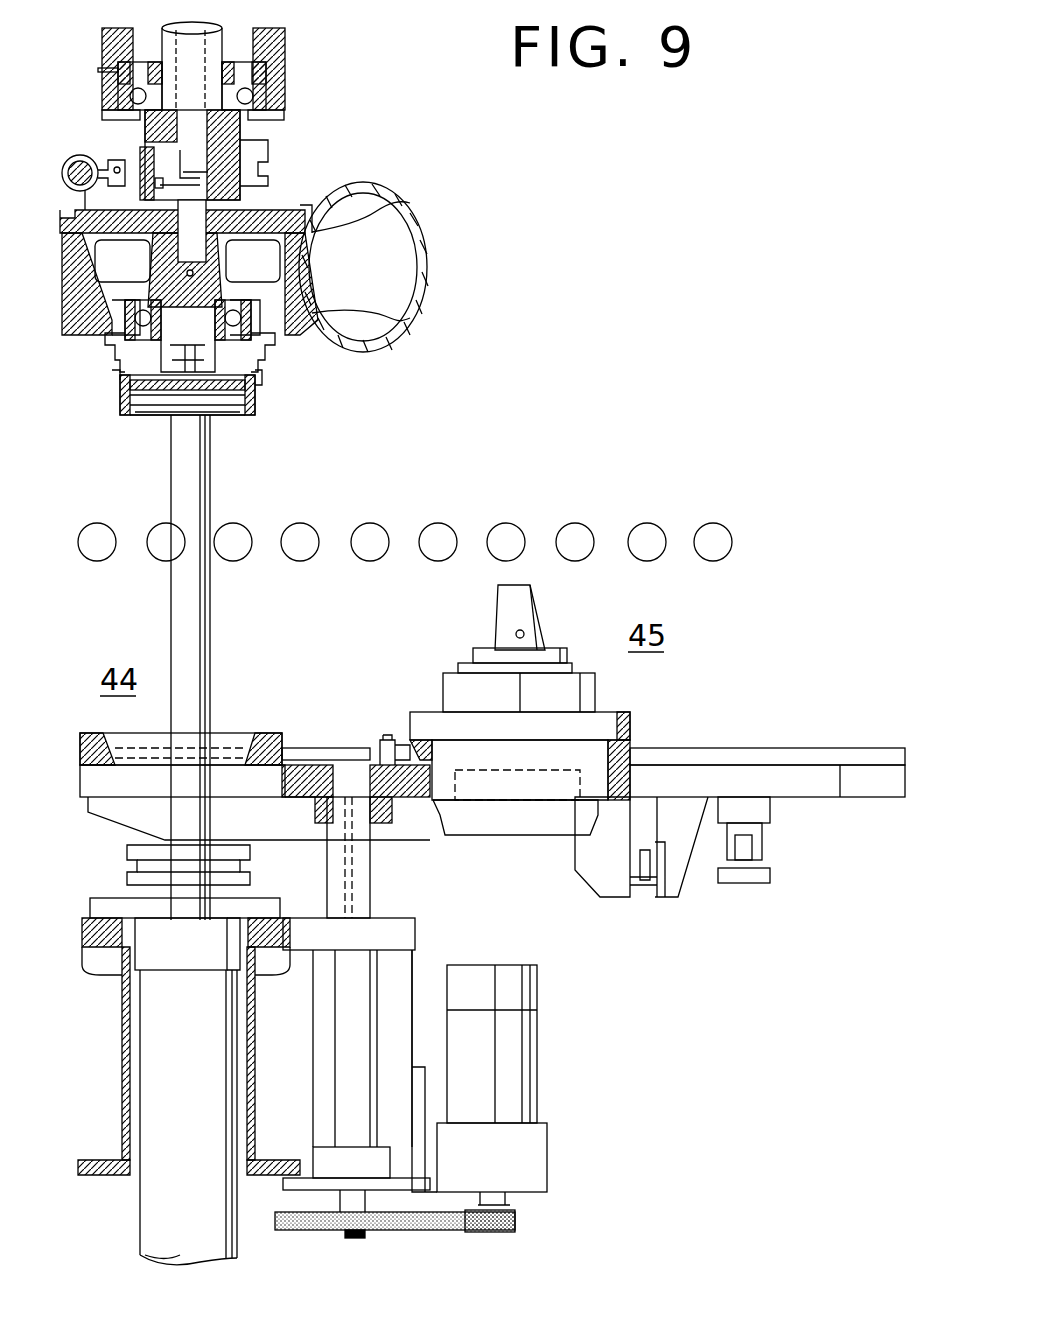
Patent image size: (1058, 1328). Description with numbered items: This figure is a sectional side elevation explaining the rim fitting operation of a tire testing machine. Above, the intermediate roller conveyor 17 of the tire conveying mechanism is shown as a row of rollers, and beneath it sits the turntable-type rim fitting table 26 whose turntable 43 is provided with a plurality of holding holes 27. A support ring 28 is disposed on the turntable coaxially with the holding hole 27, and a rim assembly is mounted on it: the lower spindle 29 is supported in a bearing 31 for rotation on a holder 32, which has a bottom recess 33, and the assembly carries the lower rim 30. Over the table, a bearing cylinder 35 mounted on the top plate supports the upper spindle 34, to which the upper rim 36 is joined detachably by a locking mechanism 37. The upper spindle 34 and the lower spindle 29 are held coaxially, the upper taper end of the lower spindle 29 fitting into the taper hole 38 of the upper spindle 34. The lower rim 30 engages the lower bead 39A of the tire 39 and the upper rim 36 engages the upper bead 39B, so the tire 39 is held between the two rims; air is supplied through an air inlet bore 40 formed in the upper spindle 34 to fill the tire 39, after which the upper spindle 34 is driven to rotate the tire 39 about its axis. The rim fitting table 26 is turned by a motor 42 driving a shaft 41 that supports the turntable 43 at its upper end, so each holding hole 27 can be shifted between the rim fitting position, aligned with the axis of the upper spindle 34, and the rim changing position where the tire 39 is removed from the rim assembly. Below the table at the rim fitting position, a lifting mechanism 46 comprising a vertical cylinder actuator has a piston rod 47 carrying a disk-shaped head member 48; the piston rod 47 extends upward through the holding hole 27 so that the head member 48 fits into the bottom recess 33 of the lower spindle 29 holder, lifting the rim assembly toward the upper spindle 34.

The intermediate roller conveyor 17 is at (575, 525).
The rim fitting table 26 is at (748, 748).
The holding hole 27 is at (136, 782).
The support ring 28 is at (278, 734).
The lower spindle 29 is at (140, 342).
The lower rim 30 is at (300, 350).
The bearing 31 is at (286, 346).
The holder 32 is at (124, 420).
The bottom recess 33 is at (228, 426).
The upper spindle 34 is at (230, 132).
The bearing cylinder 35 is at (270, 98).
The upper rim 36 is at (98, 256).
The locking mechanism 37 is at (76, 150).
The taper hole 38 is at (255, 222).
The tire 39 is at (428, 270).
The lower bead 39A is at (410, 320).
The upper bead 39B is at (400, 207).
The air inlet bore 40 is at (225, 44).
The shaft 41 is at (375, 878).
The motor 42 is at (525, 1058).
The turntable 43 is at (330, 760).
The lifting mechanism 46 is at (238, 1245).
The piston rod 47 is at (198, 679).
The head member 48 is at (153, 424).